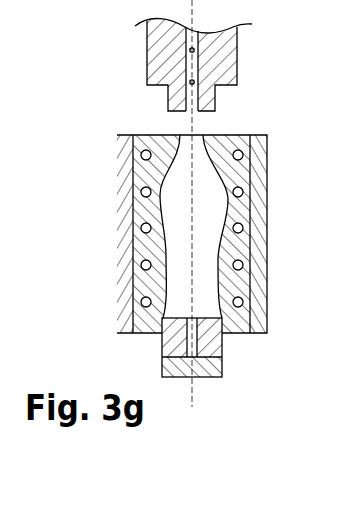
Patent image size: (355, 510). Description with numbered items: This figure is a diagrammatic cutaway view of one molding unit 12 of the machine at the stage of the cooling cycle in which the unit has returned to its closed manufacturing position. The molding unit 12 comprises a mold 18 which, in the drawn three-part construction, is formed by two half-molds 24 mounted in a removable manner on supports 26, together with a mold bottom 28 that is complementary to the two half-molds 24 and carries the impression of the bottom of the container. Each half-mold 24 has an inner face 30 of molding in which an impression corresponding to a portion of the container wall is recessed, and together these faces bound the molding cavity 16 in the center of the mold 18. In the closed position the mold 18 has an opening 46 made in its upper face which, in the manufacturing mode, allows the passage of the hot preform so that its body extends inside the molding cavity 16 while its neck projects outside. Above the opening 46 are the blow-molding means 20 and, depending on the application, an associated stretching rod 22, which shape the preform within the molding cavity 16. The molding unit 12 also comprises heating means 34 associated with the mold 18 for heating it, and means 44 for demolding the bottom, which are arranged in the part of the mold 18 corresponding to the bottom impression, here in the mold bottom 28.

The molding unit 12 is at (187, 211).
The blow-molding means 20 is at (193, 65).
The stretching rod 22 is at (197, 96).
The mold 18 is at (238, 171).
The molding cavity 16 is at (238, 231).
The supports 26 is at (127, 240).
The half-molds 24 is at (152, 285).
The opening 46 is at (152, 157).
The inner face 30 is at (212, 252).
The heating means 34 is at (240, 307).
The means for demolding the bottom 44 is at (190, 338).
The mold bottom 28 is at (172, 370).